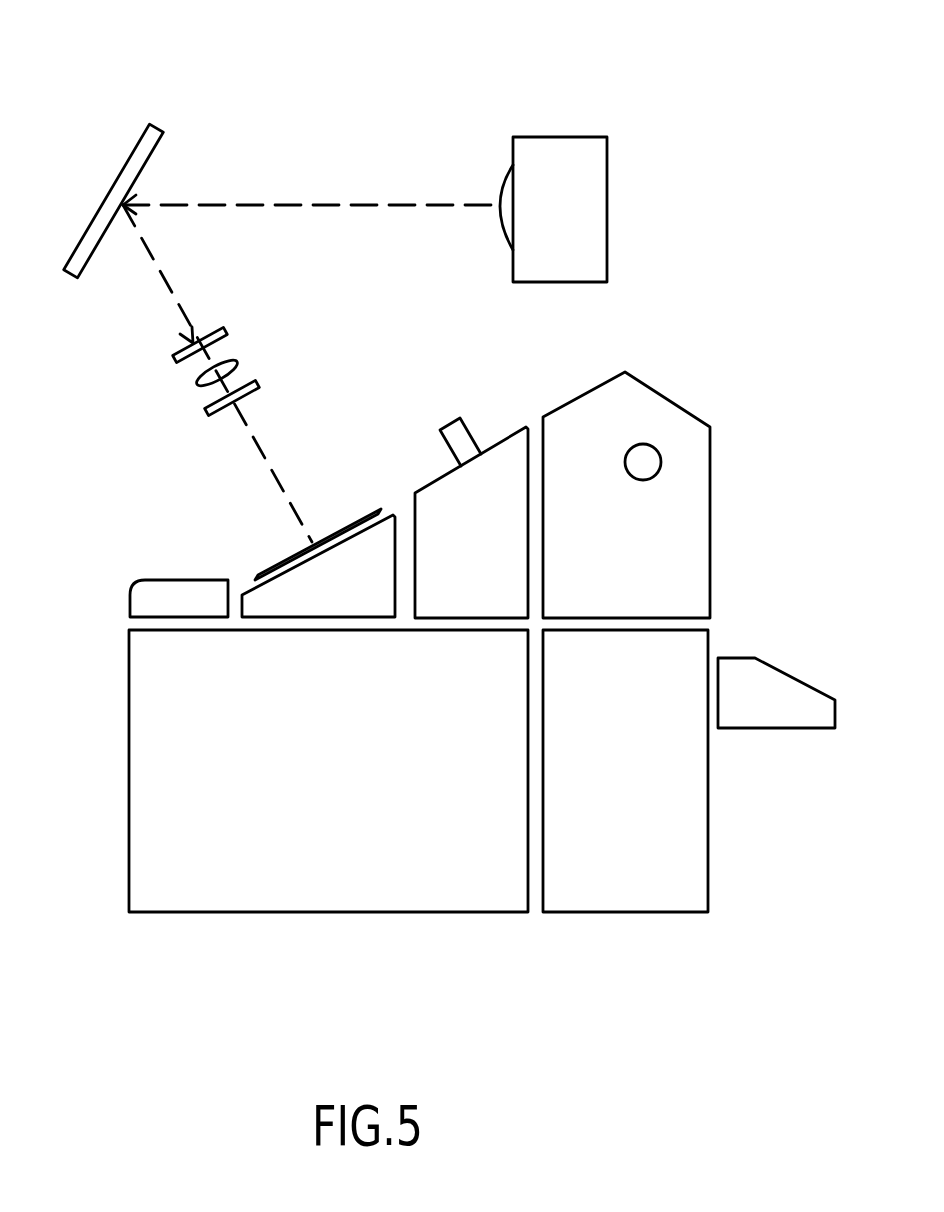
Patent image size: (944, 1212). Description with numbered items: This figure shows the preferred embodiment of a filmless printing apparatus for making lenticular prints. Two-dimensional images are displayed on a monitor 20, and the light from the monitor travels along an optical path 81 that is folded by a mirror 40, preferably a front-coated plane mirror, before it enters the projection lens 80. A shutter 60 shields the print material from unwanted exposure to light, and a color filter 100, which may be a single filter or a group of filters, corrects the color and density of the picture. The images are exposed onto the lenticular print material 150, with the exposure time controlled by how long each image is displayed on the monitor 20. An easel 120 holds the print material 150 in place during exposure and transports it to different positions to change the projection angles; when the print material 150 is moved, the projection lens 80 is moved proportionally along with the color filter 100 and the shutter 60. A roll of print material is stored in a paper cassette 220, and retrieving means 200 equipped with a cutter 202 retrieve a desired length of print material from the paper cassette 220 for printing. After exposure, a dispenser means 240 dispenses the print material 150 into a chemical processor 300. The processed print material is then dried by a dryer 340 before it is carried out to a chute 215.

The monitor 20 is at (527, 140).
The mirror 40 is at (142, 146).
The shutter 60 is at (185, 353).
The projection lens 80 is at (238, 362).
The optical path 81 is at (297, 205).
The color filter 100 is at (207, 413).
The easel 120 is at (388, 518).
The lenticular print material 150 is at (283, 562).
The retrieving means 200 is at (521, 432).
The cutter 202 is at (443, 447).
The chute 215 is at (800, 692).
The paper cassette 220 is at (588, 398).
The dispenser means 240 is at (176, 585).
The chemical processor 300 is at (143, 797).
The dryer 340 is at (703, 808).